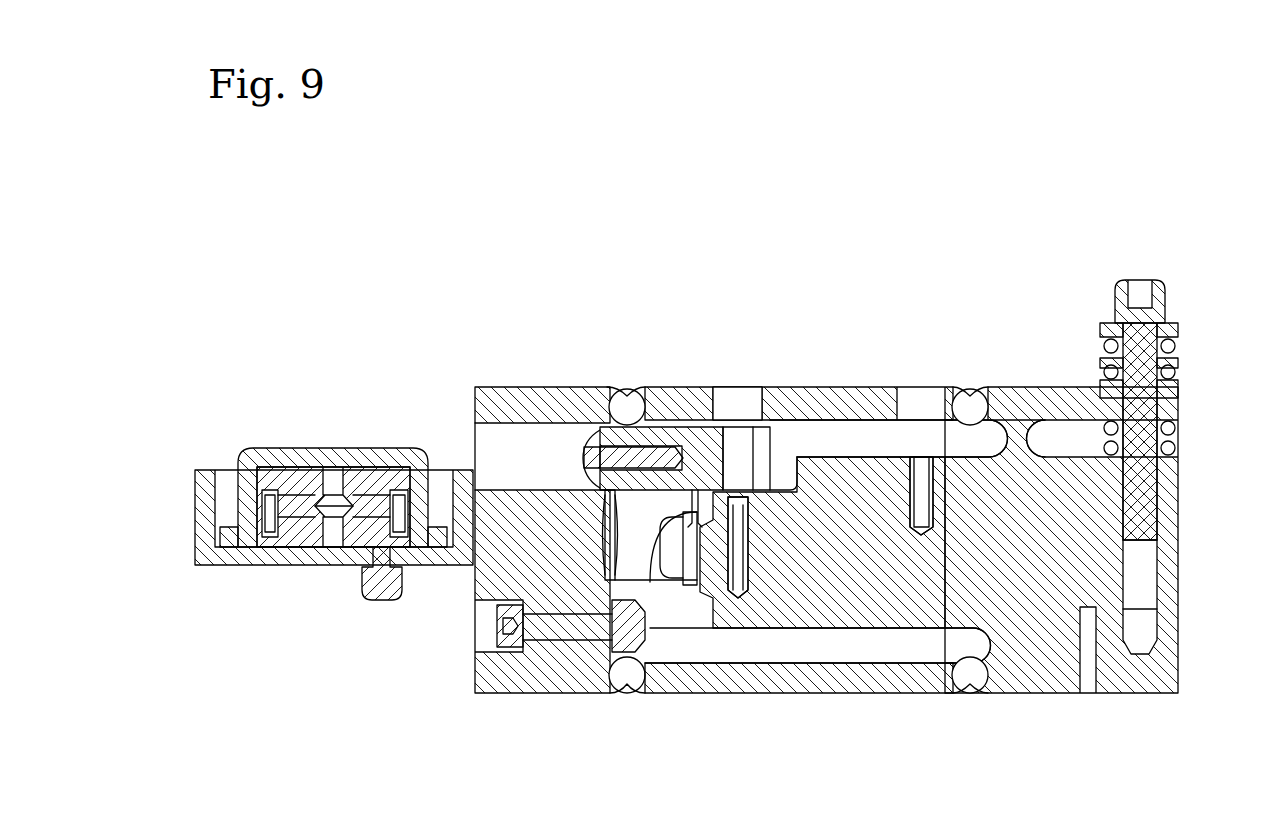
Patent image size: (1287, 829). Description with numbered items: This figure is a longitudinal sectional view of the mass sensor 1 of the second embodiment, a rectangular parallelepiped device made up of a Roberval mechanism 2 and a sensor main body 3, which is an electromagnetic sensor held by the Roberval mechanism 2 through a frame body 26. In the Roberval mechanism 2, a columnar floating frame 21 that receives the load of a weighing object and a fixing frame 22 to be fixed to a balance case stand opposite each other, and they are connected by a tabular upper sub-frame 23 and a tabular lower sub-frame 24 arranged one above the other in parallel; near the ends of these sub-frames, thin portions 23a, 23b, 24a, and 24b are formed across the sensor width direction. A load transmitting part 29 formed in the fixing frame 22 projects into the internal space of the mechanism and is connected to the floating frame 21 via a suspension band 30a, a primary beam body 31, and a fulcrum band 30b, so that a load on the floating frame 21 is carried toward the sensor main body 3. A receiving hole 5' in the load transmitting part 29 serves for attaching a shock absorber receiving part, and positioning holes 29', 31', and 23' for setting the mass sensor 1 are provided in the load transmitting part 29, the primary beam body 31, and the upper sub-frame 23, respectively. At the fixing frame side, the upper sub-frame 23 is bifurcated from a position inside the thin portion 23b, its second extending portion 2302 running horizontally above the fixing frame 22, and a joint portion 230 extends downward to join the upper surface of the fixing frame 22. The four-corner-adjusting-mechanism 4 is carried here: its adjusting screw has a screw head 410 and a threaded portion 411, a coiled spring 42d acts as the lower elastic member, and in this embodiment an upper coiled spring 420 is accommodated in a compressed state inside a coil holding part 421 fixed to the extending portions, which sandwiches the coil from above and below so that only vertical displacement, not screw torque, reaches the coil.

The mass sensor 1 is at (1148, 178).
The Roberval mechanism 2 is at (1170, 698).
The sensor main body 3 is at (290, 450).
The four-corner-adjusting-mechanism 4 is at (1187, 381).
The receiving hole 5' is at (978, 625).
The floating frame 21 is at (514, 572).
The fixing frame 22 is at (1110, 519).
The upper sub-frame 23 is at (799, 372).
The positioning hole 23' is at (709, 352).
The thin portion 23a is at (627, 388).
The thin portion 23b is at (970, 388).
The lower sub-frame 24 is at (808, 685).
The thin portion 24a is at (630, 695).
The thin portion 24b is at (972, 695).
The frame body 26 is at (200, 520).
The load transmitting part 29 is at (831, 611).
The positioning hole 29' is at (760, 649).
The suspension band 30a is at (612, 505).
The fulcrum band 30b is at (650, 582).
The primary beam body 31 is at (597, 455).
The positioning hole 31' is at (654, 385).
The coiled spring 42d is at (1175, 437).
The joint portion 230 is at (1022, 440).
The second extending portion 2302 is at (1182, 392).
The screw head 410 is at (1148, 280).
The threaded portion 411 is at (1165, 455).
The coiled spring 420 is at (1180, 350).
The coil holding part 421 is at (1183, 330).